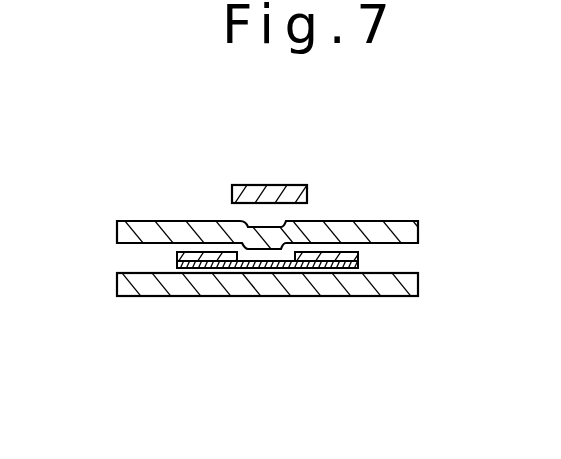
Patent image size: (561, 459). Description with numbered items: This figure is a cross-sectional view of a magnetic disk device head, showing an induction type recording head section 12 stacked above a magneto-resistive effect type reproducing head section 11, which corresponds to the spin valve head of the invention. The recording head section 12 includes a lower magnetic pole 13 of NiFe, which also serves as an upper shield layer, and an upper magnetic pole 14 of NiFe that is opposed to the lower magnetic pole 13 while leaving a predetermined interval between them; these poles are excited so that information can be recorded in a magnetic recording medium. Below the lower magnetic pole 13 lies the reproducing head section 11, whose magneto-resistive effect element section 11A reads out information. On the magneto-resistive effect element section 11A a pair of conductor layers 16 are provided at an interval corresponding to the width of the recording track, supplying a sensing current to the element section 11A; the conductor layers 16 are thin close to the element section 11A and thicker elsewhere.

The reproducing head section 11 is at (260, 292).
The magneto-resistive effect element section 11A is at (318, 260).
The recording head section 12 is at (218, 168).
The lower magnetic pole 13 is at (395, 220).
The upper magnetic pole 14 is at (287, 185).
The conductor layers 16 is at (360, 257).